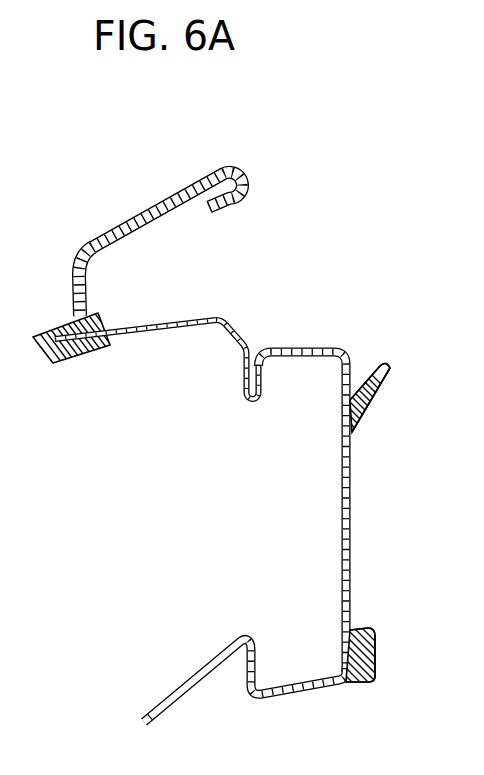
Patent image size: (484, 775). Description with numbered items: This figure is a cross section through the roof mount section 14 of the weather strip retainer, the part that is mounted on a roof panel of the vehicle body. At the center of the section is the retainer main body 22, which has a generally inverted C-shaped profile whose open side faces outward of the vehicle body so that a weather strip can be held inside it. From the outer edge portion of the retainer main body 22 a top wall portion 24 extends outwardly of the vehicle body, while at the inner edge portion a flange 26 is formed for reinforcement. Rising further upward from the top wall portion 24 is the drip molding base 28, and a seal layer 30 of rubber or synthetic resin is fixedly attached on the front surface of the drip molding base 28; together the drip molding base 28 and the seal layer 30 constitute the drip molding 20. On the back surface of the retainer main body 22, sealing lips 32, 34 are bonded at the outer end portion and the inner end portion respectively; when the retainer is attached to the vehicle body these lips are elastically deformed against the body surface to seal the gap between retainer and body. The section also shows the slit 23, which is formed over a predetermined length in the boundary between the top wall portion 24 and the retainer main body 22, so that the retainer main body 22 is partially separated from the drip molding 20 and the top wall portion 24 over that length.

The roof mount section 14 is at (274, 270).
The drip molding 20 is at (53, 155).
The retainer main body 22 is at (341, 494).
The slit 23 is at (241, 328).
The top wall portion 24 is at (200, 315).
The flange 26 is at (185, 670).
The drip molding base 28 is at (152, 201).
The seal layer 30 is at (98, 242).
The sealing lip 32 is at (377, 397).
The sealing lip 34 is at (368, 650).